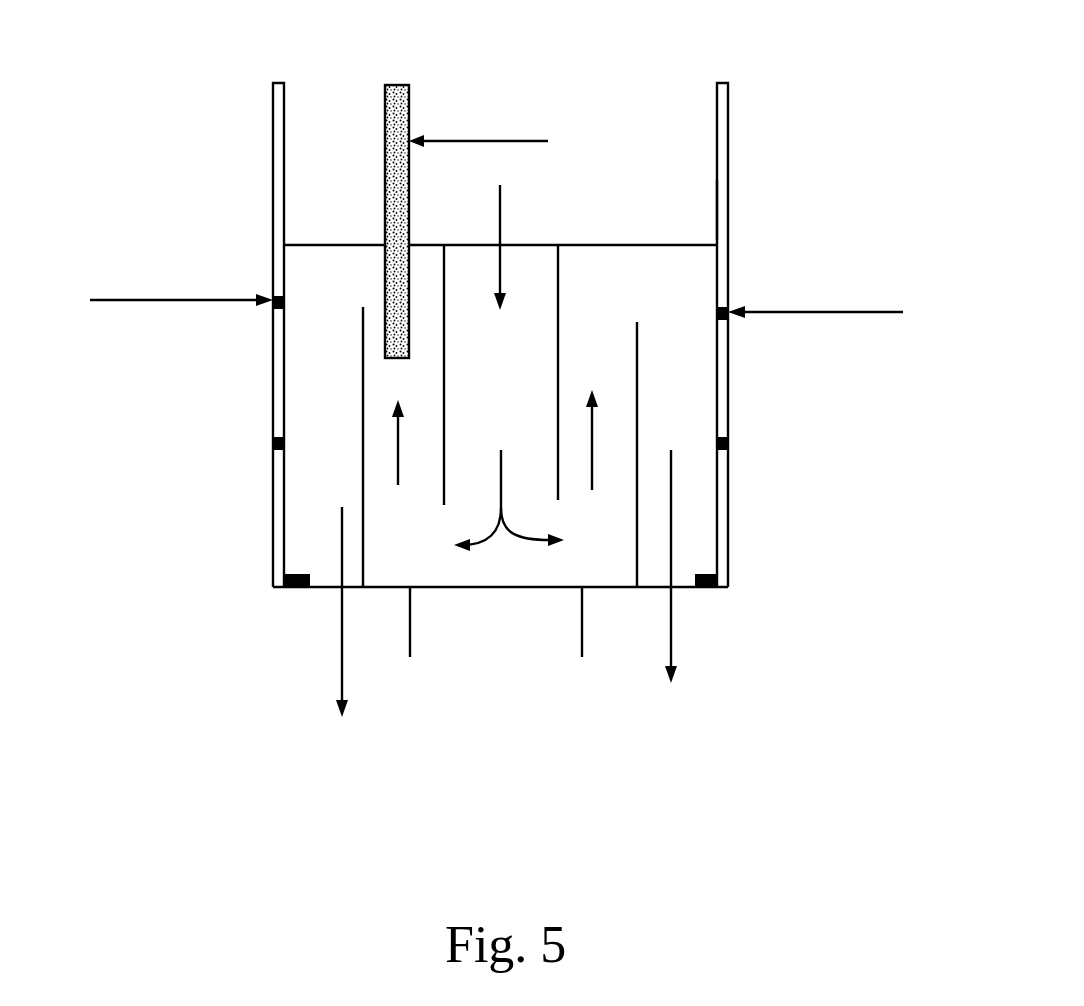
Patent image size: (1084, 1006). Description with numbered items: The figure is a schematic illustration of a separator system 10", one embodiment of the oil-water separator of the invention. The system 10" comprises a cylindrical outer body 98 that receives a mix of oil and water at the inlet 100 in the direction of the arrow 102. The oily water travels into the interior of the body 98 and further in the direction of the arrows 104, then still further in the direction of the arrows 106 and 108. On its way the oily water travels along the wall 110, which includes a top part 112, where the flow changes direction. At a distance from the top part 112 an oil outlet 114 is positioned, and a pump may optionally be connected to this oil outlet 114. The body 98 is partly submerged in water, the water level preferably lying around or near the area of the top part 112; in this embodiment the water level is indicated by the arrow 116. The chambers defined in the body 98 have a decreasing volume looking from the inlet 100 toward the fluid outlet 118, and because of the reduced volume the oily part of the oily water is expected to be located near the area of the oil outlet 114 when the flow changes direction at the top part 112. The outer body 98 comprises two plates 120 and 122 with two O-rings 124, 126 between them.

The system 10 is at (256, 264).
The outer body 98 is at (279, 130).
The inlet 100 is at (598, 245).
The arrow 102 is at (501, 210).
The arrows 104 is at (499, 462).
The arrow 106 is at (398, 462).
The arrow 108 is at (592, 464).
The wall 110 is at (363, 402).
The top part 112 is at (363, 318).
The oil outlet 114 is at (410, 113).
The arrow 116 is at (220, 302).
The fluid outlet 118 is at (322, 578).
The plate 120 is at (718, 166).
The plate 122 is at (729, 208).
The O-ring 124 is at (724, 305).
The O-ring 126 is at (728, 440).